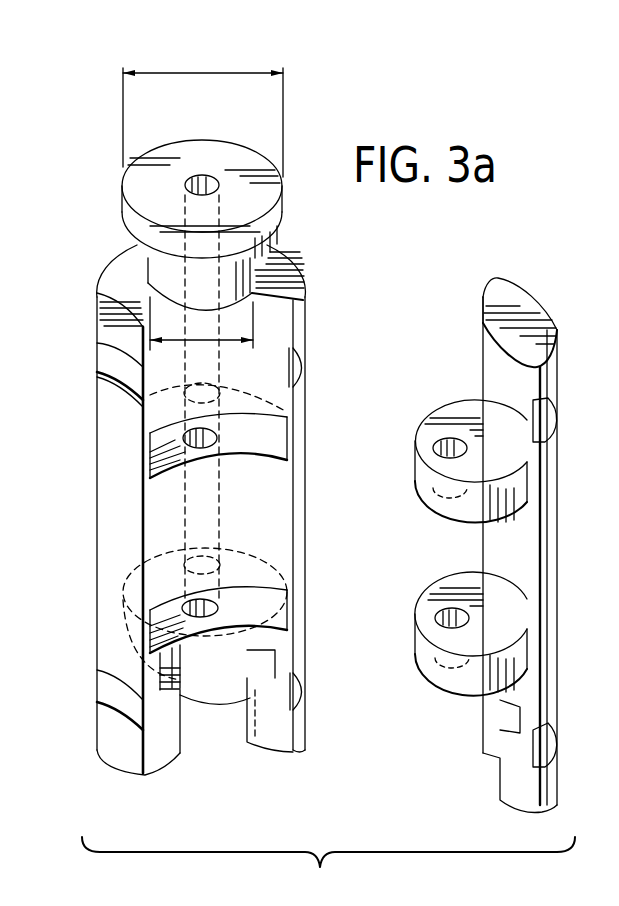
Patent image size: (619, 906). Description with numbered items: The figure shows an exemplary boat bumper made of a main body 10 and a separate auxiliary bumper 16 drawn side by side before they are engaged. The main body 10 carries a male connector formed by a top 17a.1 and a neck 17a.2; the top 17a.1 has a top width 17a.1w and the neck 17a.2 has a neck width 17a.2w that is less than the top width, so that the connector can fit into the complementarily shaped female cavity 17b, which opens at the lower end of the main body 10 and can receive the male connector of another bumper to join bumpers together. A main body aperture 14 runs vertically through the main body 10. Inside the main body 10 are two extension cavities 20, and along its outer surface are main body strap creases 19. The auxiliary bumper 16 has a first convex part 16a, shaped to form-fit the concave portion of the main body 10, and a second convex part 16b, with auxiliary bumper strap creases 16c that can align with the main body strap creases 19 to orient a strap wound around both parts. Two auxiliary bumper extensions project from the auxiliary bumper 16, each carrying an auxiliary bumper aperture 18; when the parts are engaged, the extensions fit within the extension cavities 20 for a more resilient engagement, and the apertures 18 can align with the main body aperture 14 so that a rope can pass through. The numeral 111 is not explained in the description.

The main body 10 is at (104, 146).
The main body aperture 14 is at (205, 176).
The auxiliary bumper 16 is at (552, 296).
The first convex part 16a is at (483, 352).
The second convex part 16b is at (557, 552).
The auxiliary bumper strap crease 16c is at (553, 417).
The top 17a.1 is at (130, 213).
The top width 17a.1w is at (203, 112).
The neck 17a.2 is at (160, 268).
The neck width 17a.2w is at (205, 344).
The female cavity 17b is at (208, 705).
The auxiliary bumper aperture 18 is at (433, 443).
The main body strap crease 19 is at (110, 362).
The extension cavity 20 is at (143, 447).
The tube body 111 is at (277, 328).